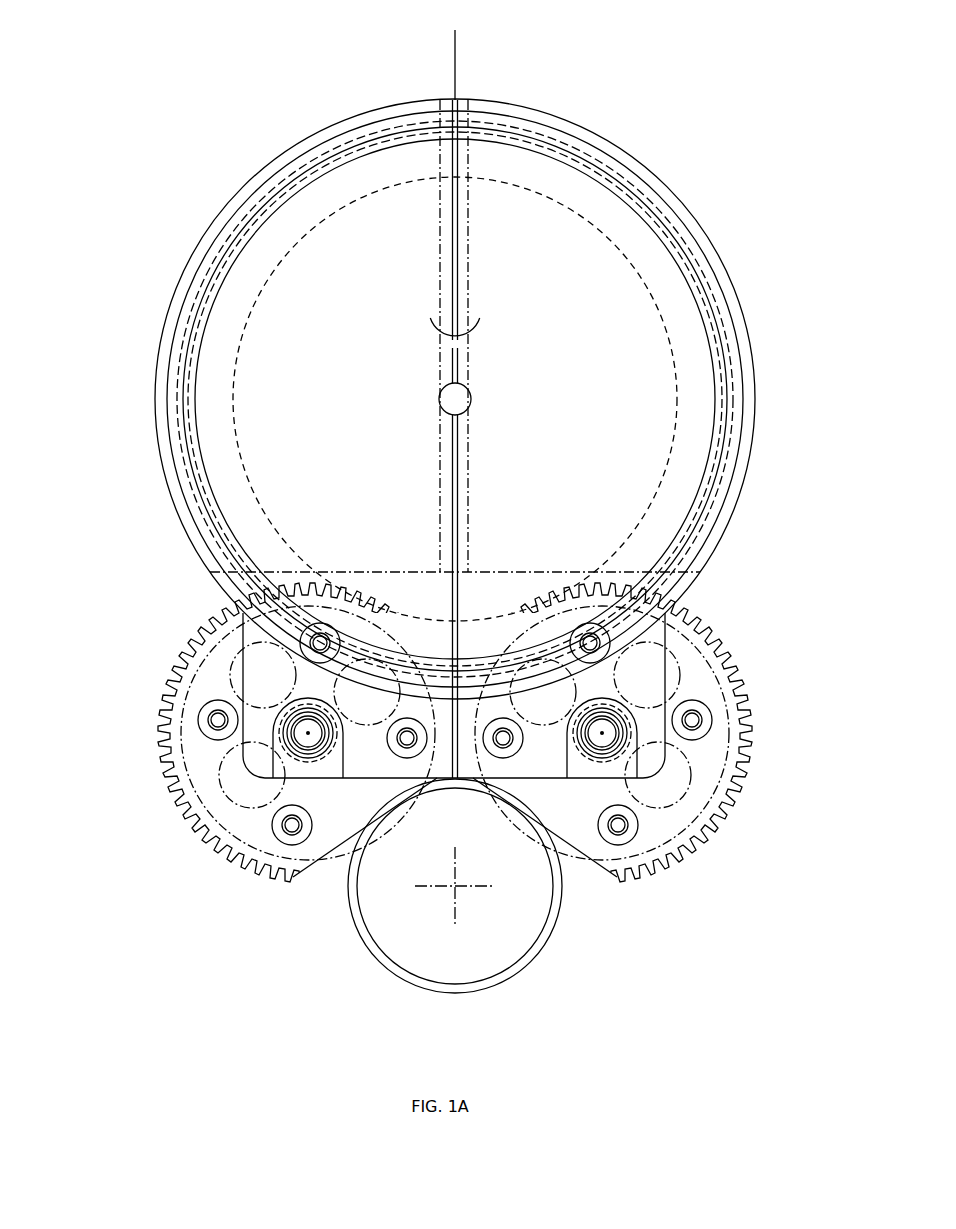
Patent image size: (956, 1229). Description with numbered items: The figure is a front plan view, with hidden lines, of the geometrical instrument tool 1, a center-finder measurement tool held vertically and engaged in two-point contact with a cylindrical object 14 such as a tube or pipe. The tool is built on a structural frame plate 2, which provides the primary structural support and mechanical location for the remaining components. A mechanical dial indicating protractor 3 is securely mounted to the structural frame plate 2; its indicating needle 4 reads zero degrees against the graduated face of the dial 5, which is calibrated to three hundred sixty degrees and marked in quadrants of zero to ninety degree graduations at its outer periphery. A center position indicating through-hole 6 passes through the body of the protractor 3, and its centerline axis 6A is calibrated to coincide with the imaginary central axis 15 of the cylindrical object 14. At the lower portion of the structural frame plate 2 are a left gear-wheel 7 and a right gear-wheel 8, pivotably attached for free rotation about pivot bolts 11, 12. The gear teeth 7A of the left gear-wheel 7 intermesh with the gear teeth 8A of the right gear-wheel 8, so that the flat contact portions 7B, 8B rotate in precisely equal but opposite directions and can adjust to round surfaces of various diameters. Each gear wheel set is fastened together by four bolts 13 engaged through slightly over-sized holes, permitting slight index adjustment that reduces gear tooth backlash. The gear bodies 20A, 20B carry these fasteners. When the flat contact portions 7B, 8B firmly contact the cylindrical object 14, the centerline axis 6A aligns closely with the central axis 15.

The geometrical instrument tool 1 is at (248, 150).
The structural frame plate 2 is at (673, 625).
The mechanical dial indicating protractor 3 is at (692, 337).
The indicating needle 4 is at (460, 588).
The graduated face of the dial 5 is at (608, 400).
The center position indicating through-hole 6 is at (470, 212).
The centerline axis of the center position indicating through-hole 6A is at (460, 42).
The left gear-wheel 7 is at (222, 666).
The gear teeth of left gear-wheel 7A is at (160, 690).
The flat contact portion of left gear-wheel 7B is at (318, 858).
The right gear-wheel 8 is at (697, 677).
The gear teeth of right gear-wheel 8A is at (750, 693).
The flat contact portion of right gear-wheel 8B is at (586, 858).
The pivot bolt 11 is at (308, 733).
The pivot bolt 12 is at (602, 733).
The bolts 13 is at (282, 834).
The cylindrical object 14 is at (388, 970).
The central axis of the cylindrical object 15 is at (457, 888).
The left gear body 20A is at (212, 807).
The right gear body 20B is at (692, 802).